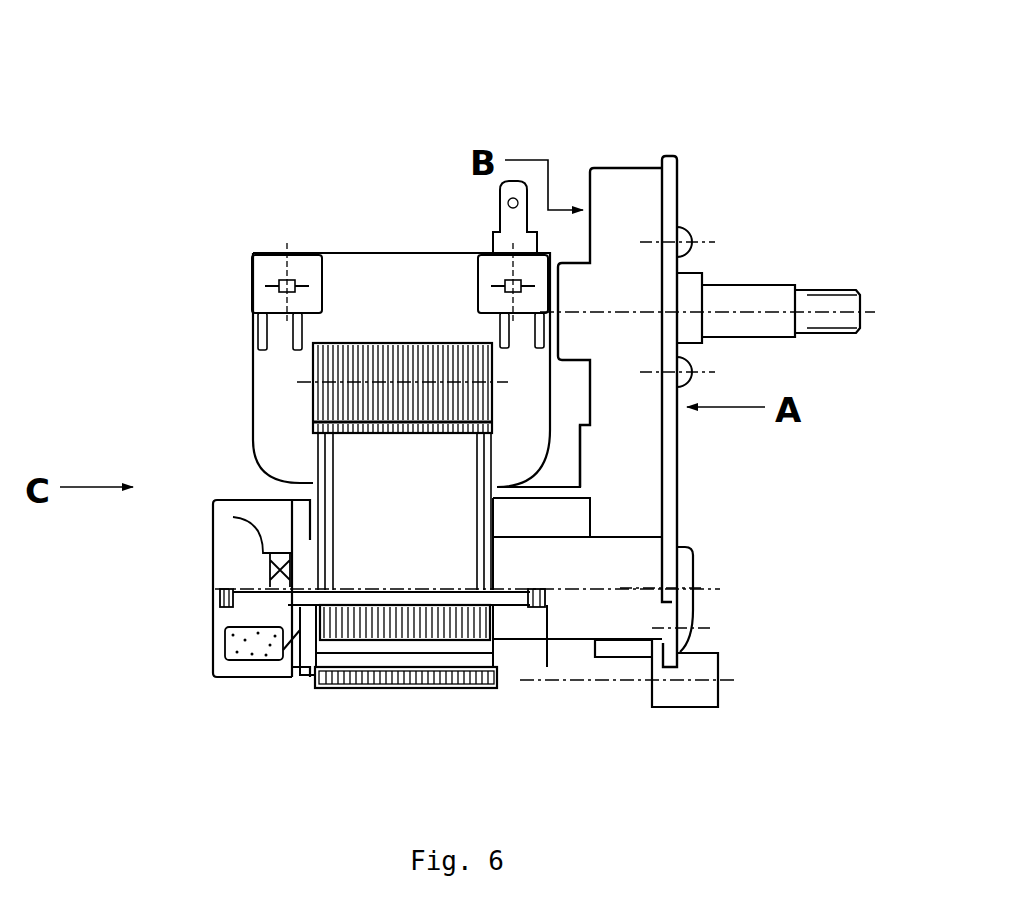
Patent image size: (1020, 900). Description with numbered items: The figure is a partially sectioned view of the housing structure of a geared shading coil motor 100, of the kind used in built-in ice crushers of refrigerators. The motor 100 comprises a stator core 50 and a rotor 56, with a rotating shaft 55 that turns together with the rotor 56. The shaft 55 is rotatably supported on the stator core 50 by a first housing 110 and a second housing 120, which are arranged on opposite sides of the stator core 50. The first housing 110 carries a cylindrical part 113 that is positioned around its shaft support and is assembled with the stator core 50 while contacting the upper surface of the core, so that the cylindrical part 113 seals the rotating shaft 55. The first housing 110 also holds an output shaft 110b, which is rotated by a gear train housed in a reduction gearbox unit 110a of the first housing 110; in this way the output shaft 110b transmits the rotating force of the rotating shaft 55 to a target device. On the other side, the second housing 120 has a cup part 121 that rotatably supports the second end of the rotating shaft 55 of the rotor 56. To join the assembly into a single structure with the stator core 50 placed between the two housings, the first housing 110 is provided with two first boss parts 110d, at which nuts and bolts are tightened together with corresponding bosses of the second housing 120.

The shading coil motor 100 is at (145, 101).
The first housing 110 is at (589, 141).
The reduction gearbox unit 110a is at (629, 190).
The output shaft 110b is at (750, 287).
The first boss parts 110d is at (550, 552).
The second housing 120 is at (205, 481).
The cup part 121 is at (212, 550).
The stator core 50 is at (375, 350).
The rotating shaft 55 is at (487, 667).
The rotor 56 is at (503, 617).
The cylindrical part 113 is at (527, 677).